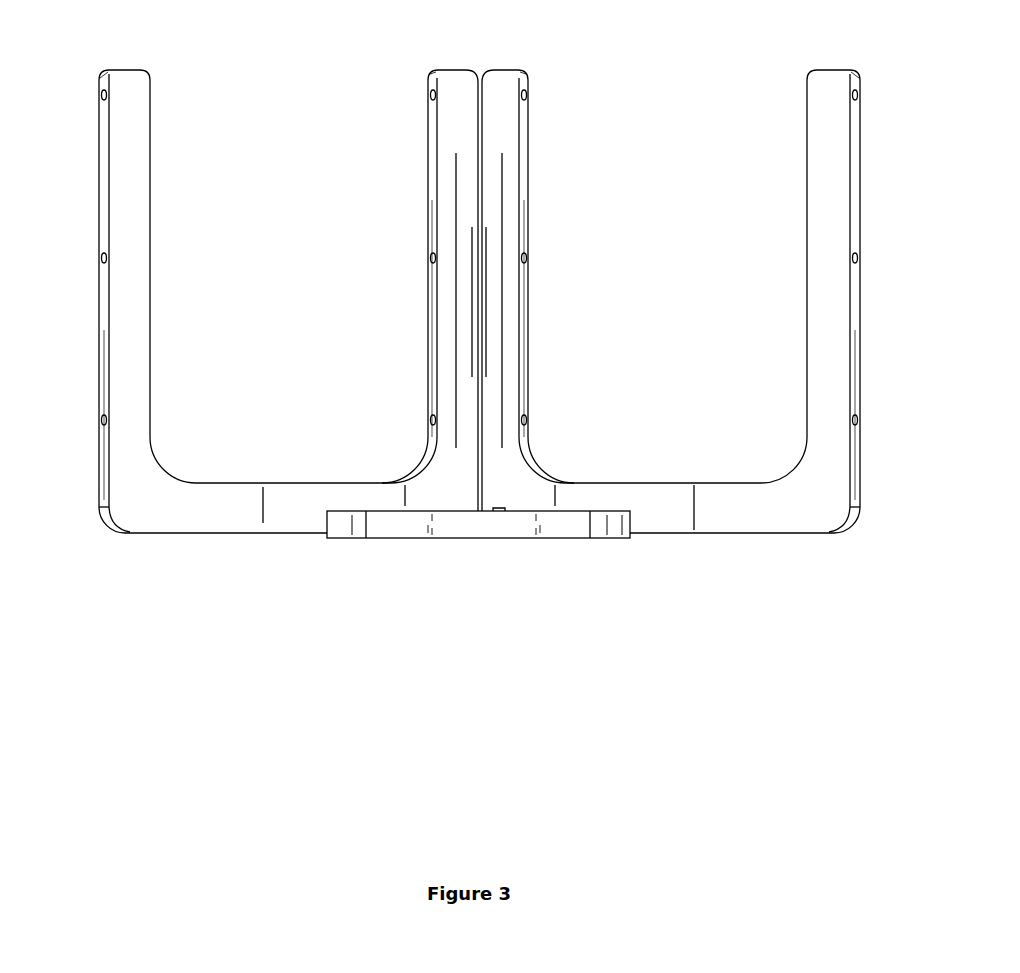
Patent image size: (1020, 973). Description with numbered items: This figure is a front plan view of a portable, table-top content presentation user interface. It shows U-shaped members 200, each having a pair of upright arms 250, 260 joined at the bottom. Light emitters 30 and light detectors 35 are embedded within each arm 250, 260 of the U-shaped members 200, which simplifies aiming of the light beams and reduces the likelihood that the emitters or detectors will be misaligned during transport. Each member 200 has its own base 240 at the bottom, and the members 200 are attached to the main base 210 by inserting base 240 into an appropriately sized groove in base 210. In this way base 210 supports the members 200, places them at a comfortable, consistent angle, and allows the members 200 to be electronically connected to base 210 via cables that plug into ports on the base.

The U shaped member 200 is at (503, 68).
The light emitter 30 is at (101, 94).
The light detector 35 is at (428, 93).
The arm 250 is at (148, 208).
The arm 260 is at (445, 195).
The base of member 240 is at (276, 508).
The base 210 is at (478, 522).